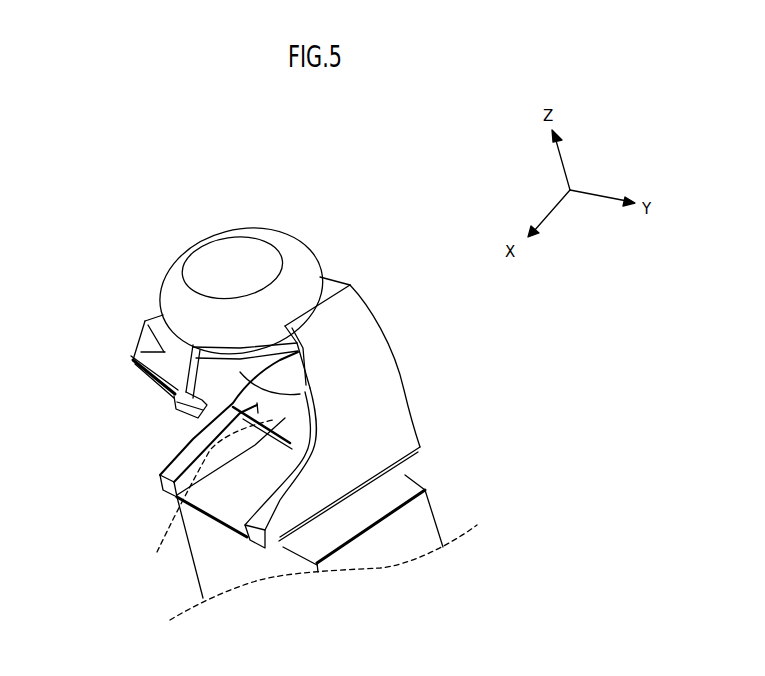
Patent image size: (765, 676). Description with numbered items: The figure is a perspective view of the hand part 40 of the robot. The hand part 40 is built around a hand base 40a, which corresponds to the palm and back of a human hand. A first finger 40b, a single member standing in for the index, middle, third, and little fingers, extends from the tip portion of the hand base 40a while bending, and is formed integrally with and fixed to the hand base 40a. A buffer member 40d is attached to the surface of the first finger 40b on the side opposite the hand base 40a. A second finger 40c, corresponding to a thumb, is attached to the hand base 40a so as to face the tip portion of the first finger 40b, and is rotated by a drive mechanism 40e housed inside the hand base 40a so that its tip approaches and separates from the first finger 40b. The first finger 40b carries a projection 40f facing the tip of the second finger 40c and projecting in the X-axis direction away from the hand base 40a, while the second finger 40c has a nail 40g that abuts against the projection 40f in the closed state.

The hand part 40 is at (340, 184).
The hand base 40a is at (358, 423).
The first finger 40b is at (141, 352).
The second finger 40c is at (224, 458).
The buffer member 40d is at (218, 250).
The drive mechanism 40e is at (353, 405).
The projection 40f is at (165, 387).
The nail 40g is at (162, 458).